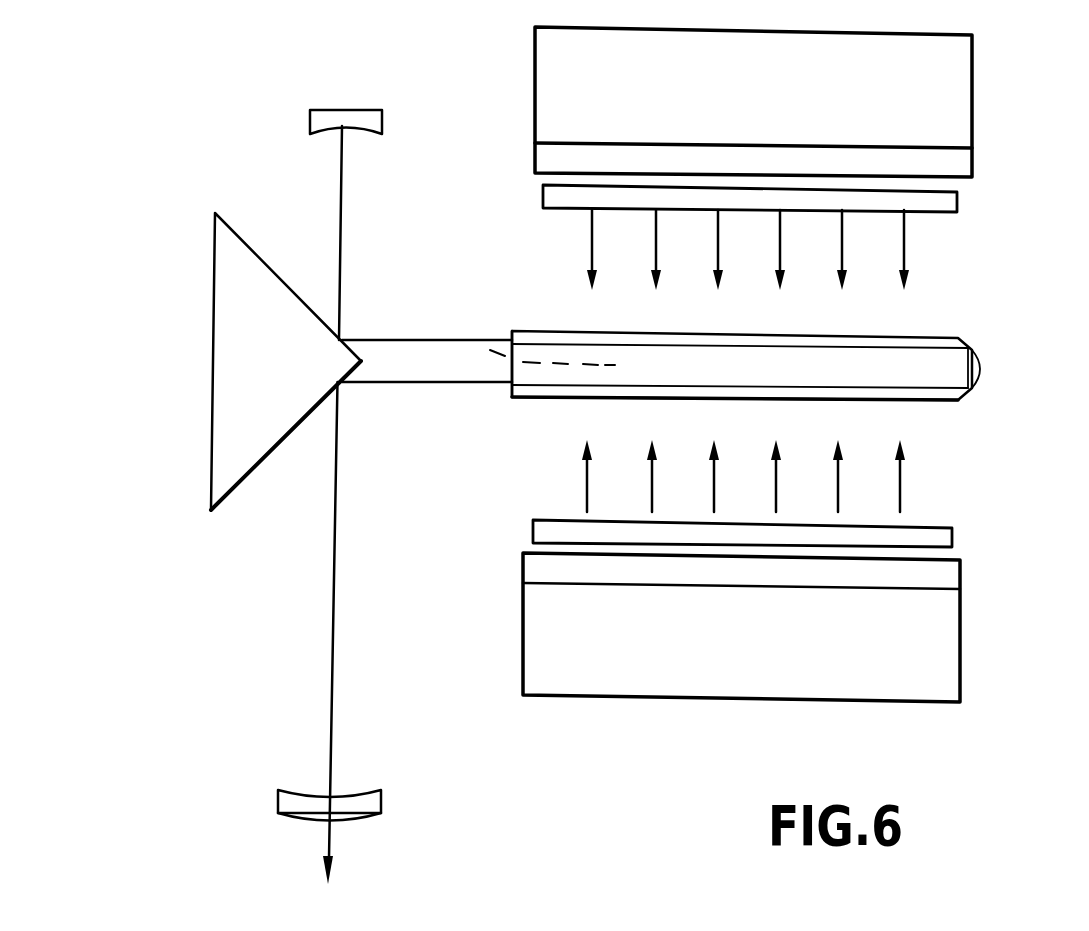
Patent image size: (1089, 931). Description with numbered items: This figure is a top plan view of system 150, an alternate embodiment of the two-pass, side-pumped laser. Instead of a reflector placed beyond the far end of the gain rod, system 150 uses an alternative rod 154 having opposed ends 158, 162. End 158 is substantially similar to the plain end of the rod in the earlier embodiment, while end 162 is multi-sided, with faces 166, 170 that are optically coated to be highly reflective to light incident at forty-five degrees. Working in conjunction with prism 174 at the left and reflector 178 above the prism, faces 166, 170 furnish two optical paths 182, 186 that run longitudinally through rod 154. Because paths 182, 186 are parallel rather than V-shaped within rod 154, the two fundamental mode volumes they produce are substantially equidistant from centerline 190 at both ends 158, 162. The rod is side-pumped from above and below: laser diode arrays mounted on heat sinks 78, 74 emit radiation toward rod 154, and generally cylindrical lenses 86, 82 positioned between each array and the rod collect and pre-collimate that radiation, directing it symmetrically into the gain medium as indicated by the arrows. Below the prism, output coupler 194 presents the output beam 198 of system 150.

The system 150 is at (197, 110).
The prism 174 is at (268, 384).
The reflector 178 is at (385, 113).
The optical path 182 is at (408, 338).
The optical path 186 is at (418, 385).
The centerline 190 is at (477, 333).
The rod 154 is at (935, 333).
The end 158 is at (512, 400).
The end 162 is at (985, 375).
The face 166 is at (968, 348).
The face 170 is at (968, 390).
The heat sink 78 is at (748, 102).
The lens 86 is at (957, 203).
The lens 82 is at (955, 537).
The heat sink 74 is at (736, 654).
The output coupler 194 is at (278, 803).
The output beam 198 is at (333, 853).